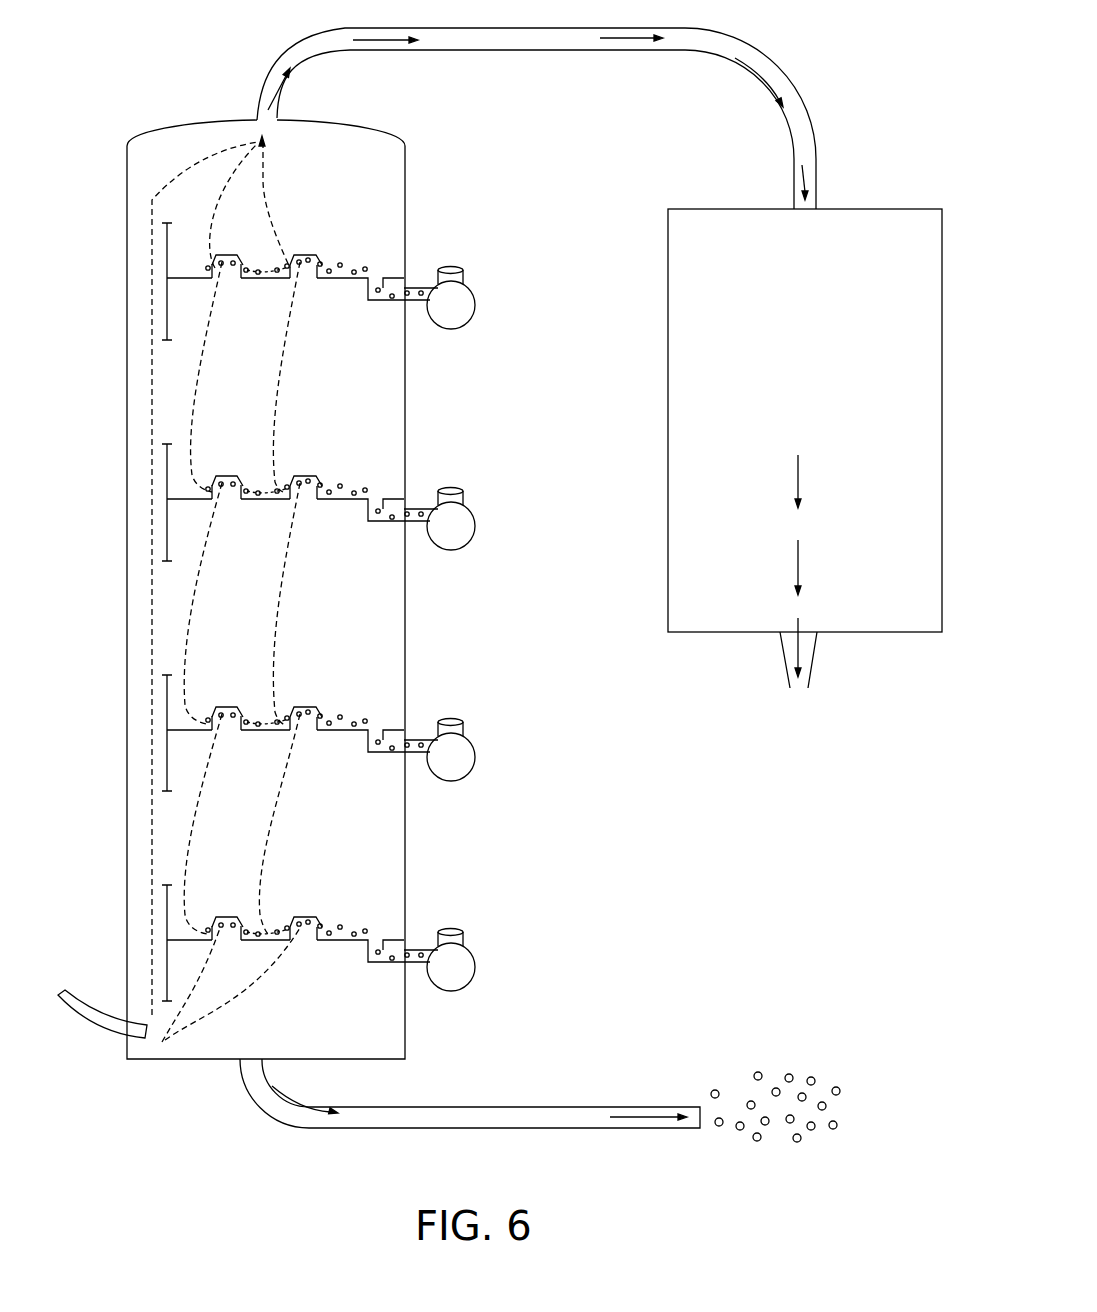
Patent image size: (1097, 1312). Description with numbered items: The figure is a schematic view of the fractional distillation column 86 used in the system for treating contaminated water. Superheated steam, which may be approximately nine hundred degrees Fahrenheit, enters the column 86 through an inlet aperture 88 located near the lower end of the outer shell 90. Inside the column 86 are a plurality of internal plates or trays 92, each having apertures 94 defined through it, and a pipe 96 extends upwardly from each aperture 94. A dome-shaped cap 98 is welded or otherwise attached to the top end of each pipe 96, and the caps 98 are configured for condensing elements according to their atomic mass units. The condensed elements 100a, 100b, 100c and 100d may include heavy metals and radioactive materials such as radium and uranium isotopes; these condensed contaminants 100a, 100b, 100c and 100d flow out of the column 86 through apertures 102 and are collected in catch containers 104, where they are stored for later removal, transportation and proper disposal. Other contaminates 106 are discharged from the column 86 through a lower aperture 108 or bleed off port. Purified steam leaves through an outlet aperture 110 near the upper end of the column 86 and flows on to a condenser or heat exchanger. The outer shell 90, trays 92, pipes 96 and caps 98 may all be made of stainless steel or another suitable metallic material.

The fractional distillation column 86 is at (156, 59).
The inlet aperture 88 is at (110, 1031).
The outer shell 90 is at (127, 578).
The tray 92 is at (262, 281).
The aperture 94 is at (212, 281).
The pipe 96 is at (326, 270).
The dome-shaped cap 98 is at (307, 228).
The condensed element 100a is at (431, 917).
The condensed element 100b is at (431, 707).
The condensed element 100c is at (431, 476).
The condensed element 100d is at (421, 288).
The aperture 102 is at (415, 301).
The catch container 104 is at (476, 305).
The other contaminates 106 is at (772, 1078).
The lower aperture 108 is at (240, 1060).
The outlet aperture 110 is at (257, 120).